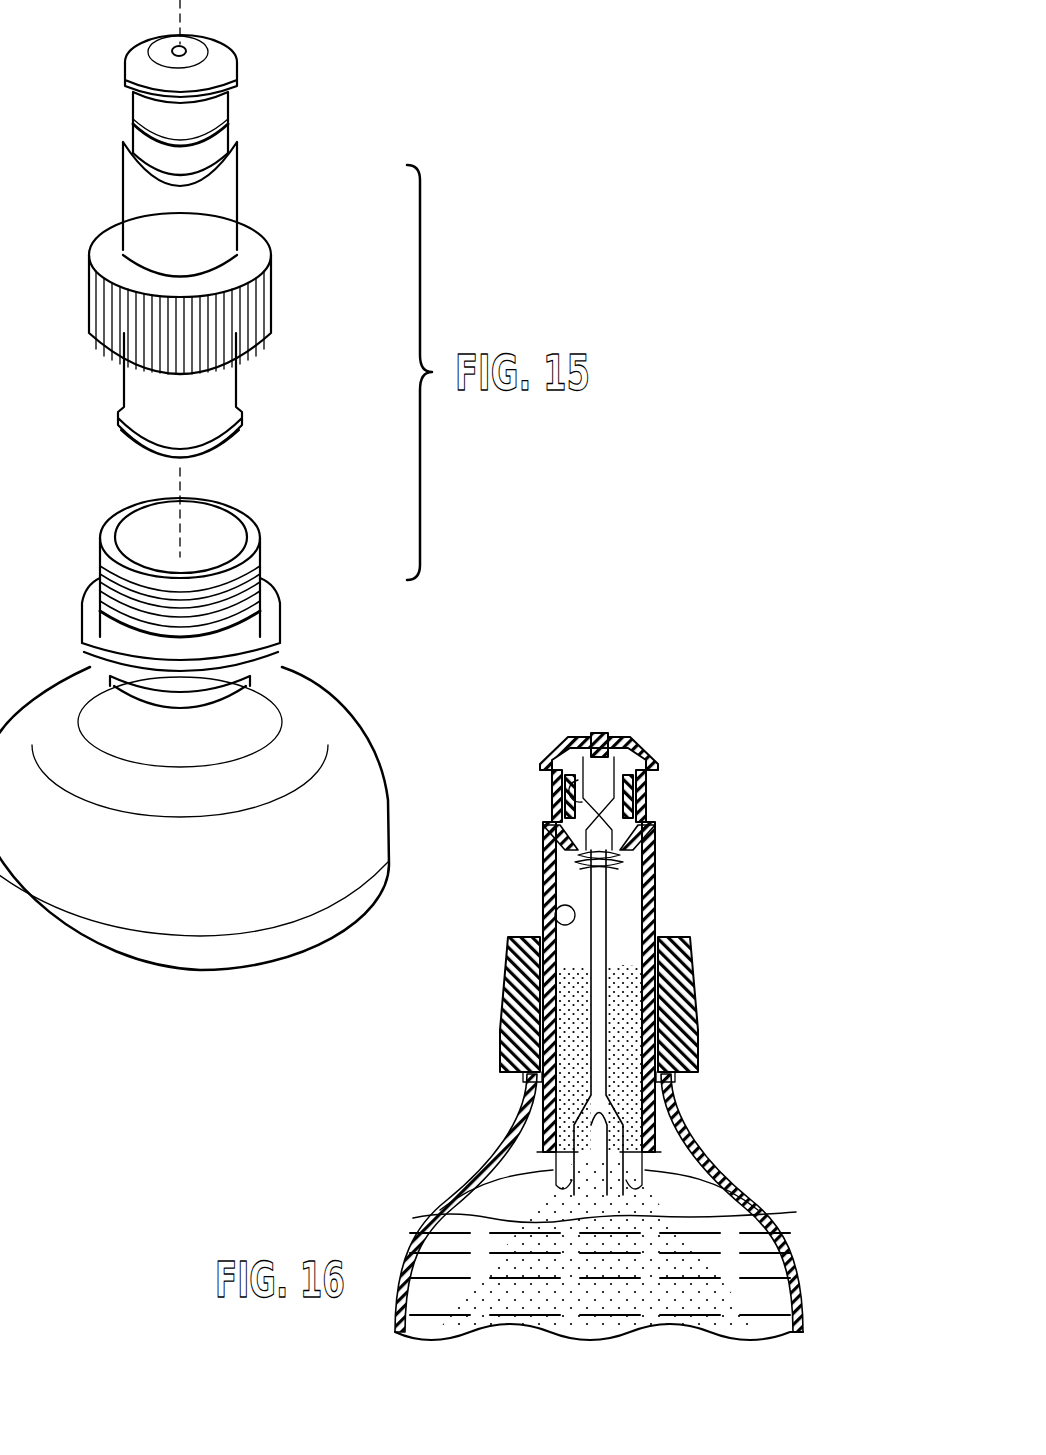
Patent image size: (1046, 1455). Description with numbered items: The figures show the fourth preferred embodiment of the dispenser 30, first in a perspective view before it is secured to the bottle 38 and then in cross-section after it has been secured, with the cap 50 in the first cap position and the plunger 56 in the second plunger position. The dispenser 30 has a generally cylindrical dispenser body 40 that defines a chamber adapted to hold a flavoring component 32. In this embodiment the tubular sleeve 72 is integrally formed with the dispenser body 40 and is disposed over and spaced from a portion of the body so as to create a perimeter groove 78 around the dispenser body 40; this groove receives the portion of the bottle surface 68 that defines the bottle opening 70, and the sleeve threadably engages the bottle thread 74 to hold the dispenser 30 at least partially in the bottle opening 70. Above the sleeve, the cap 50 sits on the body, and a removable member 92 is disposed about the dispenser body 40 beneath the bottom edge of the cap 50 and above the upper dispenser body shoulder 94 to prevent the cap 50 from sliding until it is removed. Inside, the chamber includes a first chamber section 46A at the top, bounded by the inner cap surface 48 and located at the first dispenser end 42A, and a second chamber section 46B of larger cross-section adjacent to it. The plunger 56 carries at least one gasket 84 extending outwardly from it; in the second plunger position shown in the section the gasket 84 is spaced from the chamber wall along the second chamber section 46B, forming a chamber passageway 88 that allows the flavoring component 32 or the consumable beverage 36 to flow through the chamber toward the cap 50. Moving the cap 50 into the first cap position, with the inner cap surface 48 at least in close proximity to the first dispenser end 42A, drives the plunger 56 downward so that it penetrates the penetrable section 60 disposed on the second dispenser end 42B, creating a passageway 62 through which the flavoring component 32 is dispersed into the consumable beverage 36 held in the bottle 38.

In FIG. 15, the cap 50 is at (130, 75).
In FIG. 16, the cap 50 is at (622, 740).
In FIG. 15, the removable member 92 is at (220, 145).
In FIG. 15, the upper dispenser body shoulder 94 is at (228, 160).
In FIG. 15, the dispenser body 40 is at (238, 228).
In FIG. 16, the dispenser body 40 is at (657, 895).
In FIG. 15, the dispenser 30 is at (298, 260).
In FIG. 16, the dispenser 30 is at (700, 918).
In FIG. 15, the tubular sleeve 72 is at (268, 333).
In FIG. 16, the tubular sleeve 72 is at (700, 965).
In FIG. 15, the perimeter groove 78 is at (108, 350).
In FIG. 15, the bottle surface 68 is at (130, 515).
In FIG. 15, the bottle opening 70 is at (205, 528).
In FIG. 15, the bottle thread 74 is at (262, 580).
In FIG. 15, the bottle 38 is at (207, 899).
In FIG. 16, the bottle 38 is at (772, 1208).
In FIG. 16, the first dispenser end 42A is at (648, 783).
In FIG. 16, the second dispenser end 42B is at (660, 1160).
In FIG. 16, the inner cap surface 48 is at (563, 782).
In FIG. 16, the first chamber section 46A is at (565, 783).
In FIG. 16, the second chamber section 46B is at (557, 906).
In FIG. 16, the gasket 84 is at (636, 858).
In FIG. 16, the chamber passageway 88 is at (574, 857).
In FIG. 16, the plunger 56 is at (595, 888).
In FIG. 16, the penetrable section 60 is at (485, 1172).
In FIG. 16, the passageway 62 is at (555, 1208).
In FIG. 16, the consumable beverage 36 is at (611, 1309).
In FIG. 16, the flavoring component 32 is at (745, 1288).